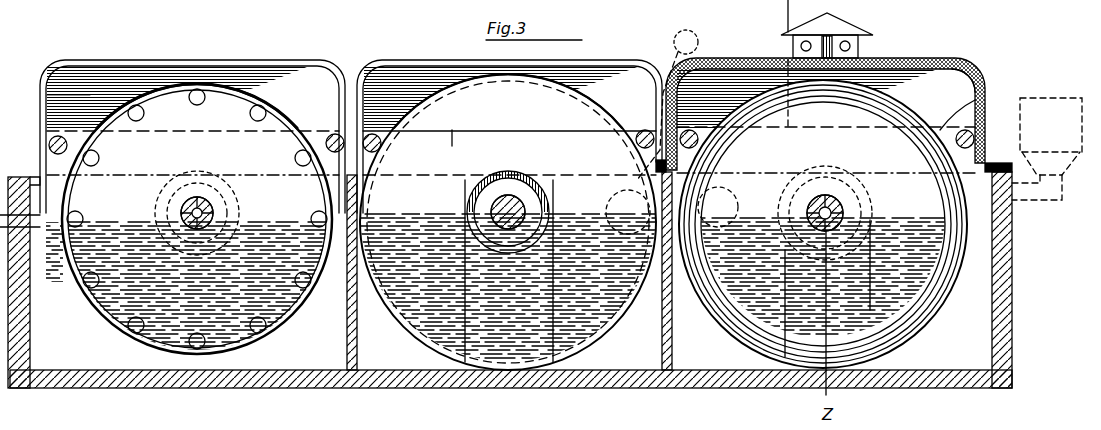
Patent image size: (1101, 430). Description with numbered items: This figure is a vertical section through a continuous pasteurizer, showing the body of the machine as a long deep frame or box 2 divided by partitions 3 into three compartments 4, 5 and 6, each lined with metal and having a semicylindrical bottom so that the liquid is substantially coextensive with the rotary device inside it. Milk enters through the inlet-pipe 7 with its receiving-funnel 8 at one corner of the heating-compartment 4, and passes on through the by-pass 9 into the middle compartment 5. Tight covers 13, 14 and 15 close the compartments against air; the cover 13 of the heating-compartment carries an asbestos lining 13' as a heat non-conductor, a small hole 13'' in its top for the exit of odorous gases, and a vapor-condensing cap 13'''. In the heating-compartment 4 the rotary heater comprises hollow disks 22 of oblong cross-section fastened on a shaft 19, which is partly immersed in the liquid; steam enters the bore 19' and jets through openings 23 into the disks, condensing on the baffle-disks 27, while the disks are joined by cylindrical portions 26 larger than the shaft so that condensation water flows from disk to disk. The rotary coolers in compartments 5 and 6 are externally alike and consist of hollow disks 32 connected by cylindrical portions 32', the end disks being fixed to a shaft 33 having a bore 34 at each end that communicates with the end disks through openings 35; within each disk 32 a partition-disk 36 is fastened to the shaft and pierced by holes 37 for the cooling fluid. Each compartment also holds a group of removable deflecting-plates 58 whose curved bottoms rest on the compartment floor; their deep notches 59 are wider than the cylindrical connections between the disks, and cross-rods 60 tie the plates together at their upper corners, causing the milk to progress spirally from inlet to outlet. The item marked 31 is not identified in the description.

The frame or box 2 is at (436, 388).
The partitions 3 is at (357, 343).
The heating-compartment 4 is at (932, 318).
The compartment 5 is at (605, 328).
The compartment 6 is at (189, 219).
The inlet-pipe 7 is at (1045, 200).
The receiving-funnel 8 is at (1051, 136).
The by-pass 9 is at (652, 132).
The cover 13 is at (825, 86).
The asbestos lining 13' is at (982, 67).
The hole 13'' is at (858, 46).
The vapor-condensing cap 13''' is at (845, 19).
The cover 14 is at (645, 54).
The cover 15 is at (342, 54).
The shaft 19 is at (804, 186).
The bore 19' is at (824, 180).
The hollow disks 22 is at (745, 112).
The openings 23 is at (843, 212).
The cylindrical portions 26 is at (825, 206).
The baffle-disk 27 is at (735, 204).
The hood lining 31 is at (125, 100).
The hollow disks 32 is at (359, 82).
The cylindrical portions 32' is at (543, 209).
The shaft 33 is at (205, 210).
The bore 34 is at (205, 226).
The openings 35 is at (202, 206).
The partition-disk 36 is at (177, 156).
The holes 37 is at (270, 112).
The deflecting-plates 58 is at (950, 118).
The notches or recesses 59 is at (510, 176).
The cross-rods 60 is at (395, 162).